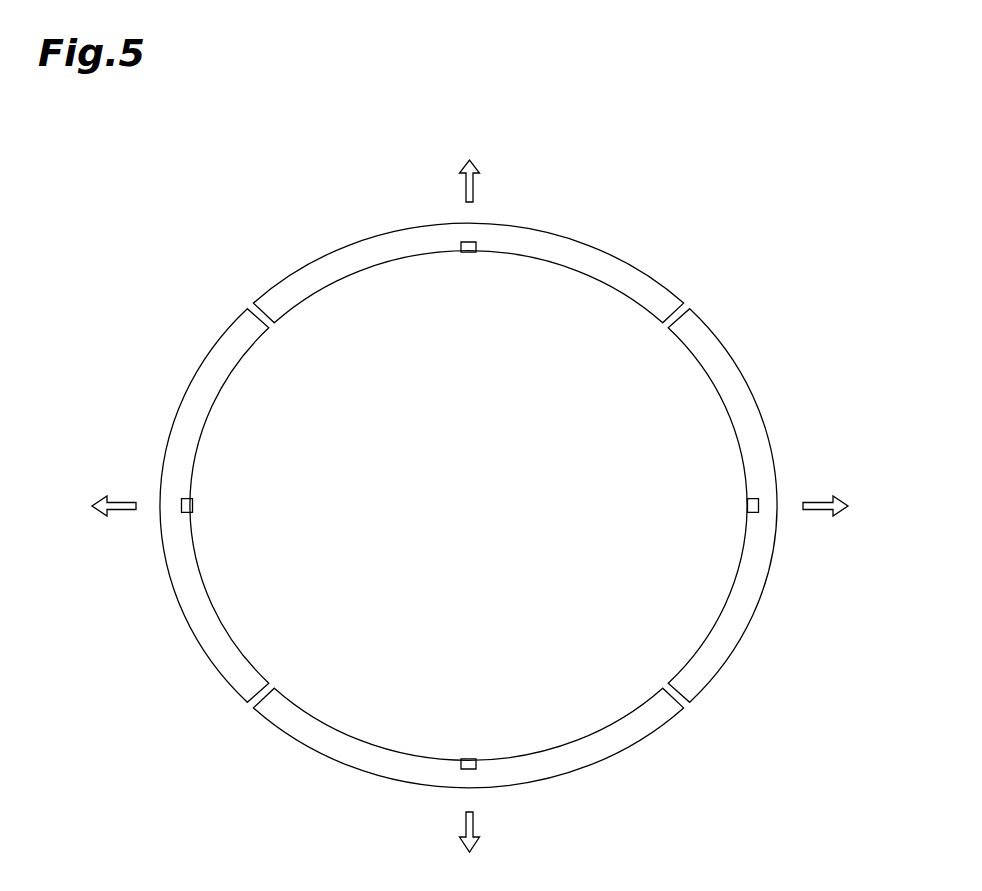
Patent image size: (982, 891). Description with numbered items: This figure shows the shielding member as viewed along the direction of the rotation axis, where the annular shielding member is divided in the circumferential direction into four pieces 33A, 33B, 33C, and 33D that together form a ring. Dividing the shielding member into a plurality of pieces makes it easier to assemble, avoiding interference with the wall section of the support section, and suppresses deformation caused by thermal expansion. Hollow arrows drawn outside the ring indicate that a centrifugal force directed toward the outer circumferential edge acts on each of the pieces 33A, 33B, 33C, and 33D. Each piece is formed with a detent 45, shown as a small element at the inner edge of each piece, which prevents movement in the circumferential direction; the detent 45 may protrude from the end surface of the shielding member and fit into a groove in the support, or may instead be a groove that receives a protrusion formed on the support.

The piece 33A is at (562, 235).
The piece 33B is at (764, 419).
The piece 33C is at (622, 759).
The piece 33D is at (212, 662).
The detent 45 is at (463, 254).